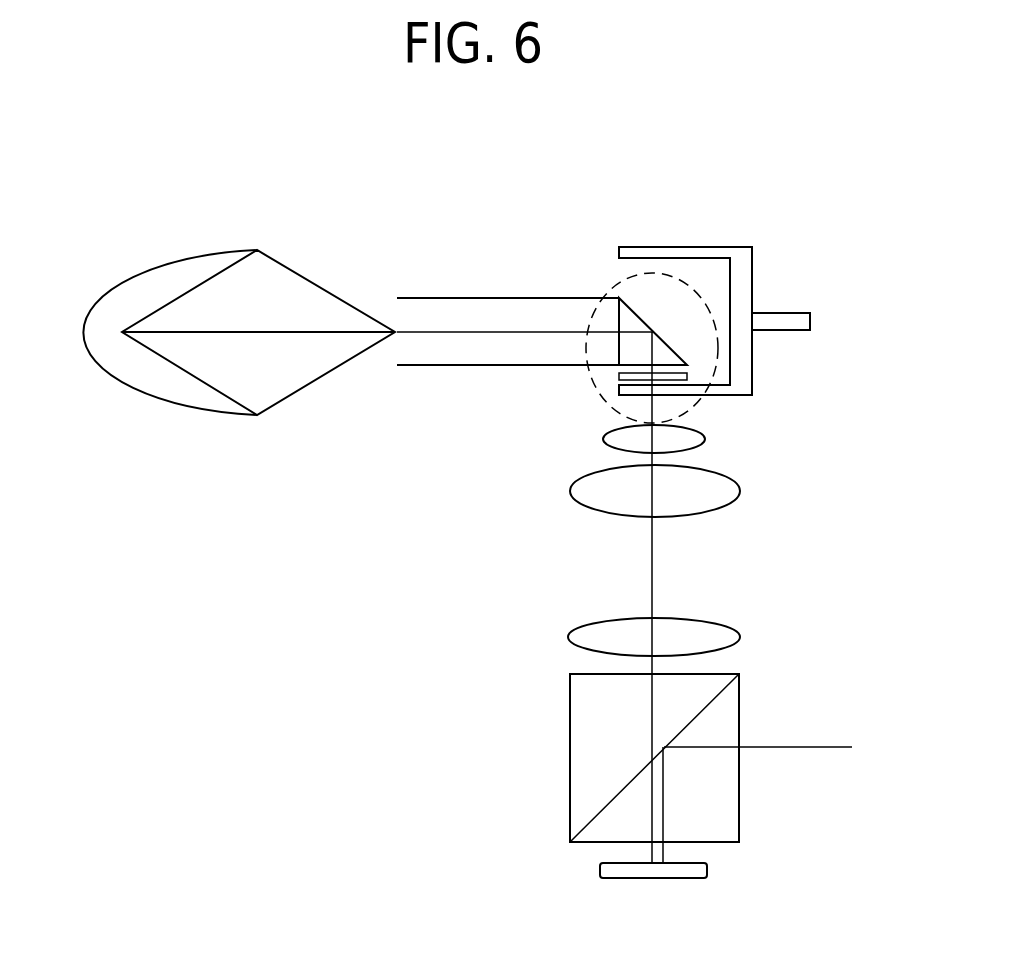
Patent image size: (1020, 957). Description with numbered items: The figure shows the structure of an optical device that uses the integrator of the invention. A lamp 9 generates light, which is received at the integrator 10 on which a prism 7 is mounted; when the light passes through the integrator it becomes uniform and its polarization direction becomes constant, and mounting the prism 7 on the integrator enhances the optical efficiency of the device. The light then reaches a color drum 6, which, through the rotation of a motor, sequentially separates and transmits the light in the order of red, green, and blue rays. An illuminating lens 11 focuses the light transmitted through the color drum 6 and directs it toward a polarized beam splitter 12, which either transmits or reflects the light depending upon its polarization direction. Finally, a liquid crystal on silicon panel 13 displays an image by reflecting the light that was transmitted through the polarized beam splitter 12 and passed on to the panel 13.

The color drum 6 is at (800, 322).
The prism 7 is at (665, 345).
The lamp 9 is at (112, 375).
The light beam 10 is at (487, 297).
The illuminating lens 11 is at (615, 637).
The polarized beam splitter 12 is at (725, 712).
The liquid crystal on silicon panel 13 is at (690, 870).